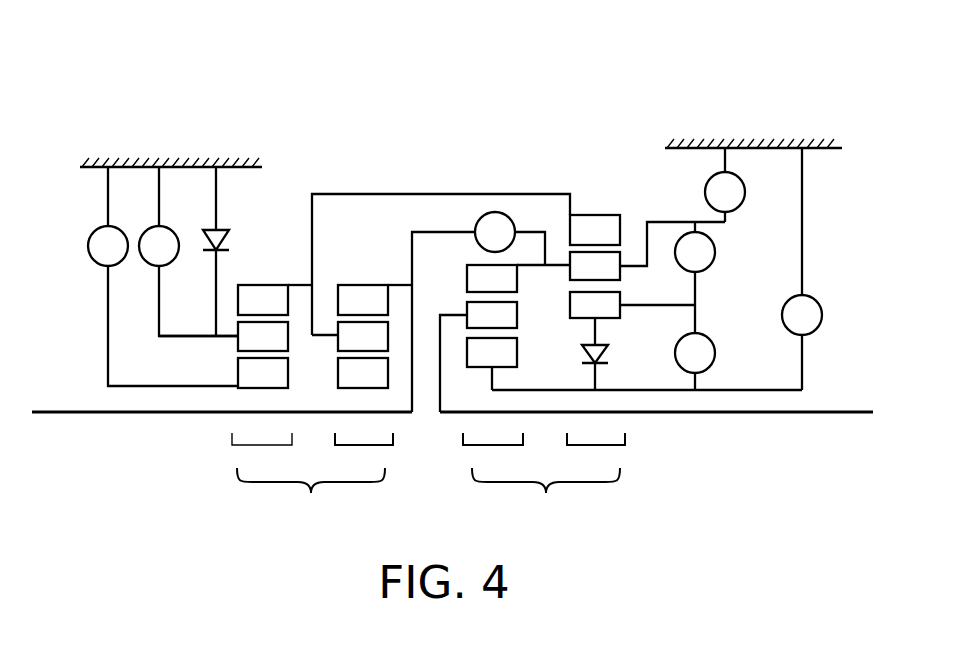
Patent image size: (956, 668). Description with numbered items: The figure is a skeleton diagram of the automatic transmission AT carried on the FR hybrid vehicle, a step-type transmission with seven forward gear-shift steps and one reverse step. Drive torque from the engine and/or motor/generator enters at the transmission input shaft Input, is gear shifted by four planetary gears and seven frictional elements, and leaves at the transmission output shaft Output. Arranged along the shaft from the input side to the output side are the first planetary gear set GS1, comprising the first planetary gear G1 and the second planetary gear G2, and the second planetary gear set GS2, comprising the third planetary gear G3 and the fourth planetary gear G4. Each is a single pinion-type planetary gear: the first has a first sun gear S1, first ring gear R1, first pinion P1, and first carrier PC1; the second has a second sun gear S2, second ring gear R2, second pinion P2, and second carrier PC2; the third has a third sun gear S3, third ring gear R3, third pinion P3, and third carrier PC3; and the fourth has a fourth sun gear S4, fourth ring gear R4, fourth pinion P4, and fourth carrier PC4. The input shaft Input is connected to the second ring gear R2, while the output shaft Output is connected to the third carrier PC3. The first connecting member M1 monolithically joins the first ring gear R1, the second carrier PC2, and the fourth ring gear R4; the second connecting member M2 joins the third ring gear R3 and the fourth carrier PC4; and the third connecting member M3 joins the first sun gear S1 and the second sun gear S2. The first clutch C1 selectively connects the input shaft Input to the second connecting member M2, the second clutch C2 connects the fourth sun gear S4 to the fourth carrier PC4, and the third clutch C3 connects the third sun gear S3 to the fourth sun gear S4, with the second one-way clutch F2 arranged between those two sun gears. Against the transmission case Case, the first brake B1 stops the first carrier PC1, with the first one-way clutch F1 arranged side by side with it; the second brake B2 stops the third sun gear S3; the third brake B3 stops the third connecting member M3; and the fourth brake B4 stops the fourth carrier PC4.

The automatic transmission AT is at (436, 40).
The transmission case Case is at (126, 168).
The transmission input shaft Input is at (82, 412).
The transmission output shaft Output is at (735, 412).
The first connecting member M1 is at (449, 194).
The second connecting member M2 is at (547, 267).
The third connecting member M3 is at (253, 322).
The first brake B1 is at (188, 251).
The second brake B2 is at (802, 269).
The third brake B3 is at (163, 276).
The fourth brake B4 is at (725, 185).
The first clutch C1 is at (510, 238).
The second clutch C2 is at (695, 277).
The third clutch C3 is at (695, 361).
The first one-way clutch F1 is at (228, 223).
The second one-way clutch F2 is at (606, 351).
The first planetary gear G1 is at (262, 452).
The second planetary gear G2 is at (364, 452).
The third planetary gear G3 is at (493, 452).
The fourth planetary gear G4 is at (596, 452).
The first planetary gear set GS1 is at (311, 496).
The second planetary gear set GS2 is at (546, 496).
The first ring gear R1 is at (275, 300).
The second ring gear R2 is at (375, 300).
The third ring gear R3 is at (518, 278).
The fourth ring gear R4 is at (595, 230).
The first pinion P1 is at (263, 336).
The second pinion P2 is at (363, 336).
The third pinion P3 is at (492, 315).
The fourth pinion P4 is at (595, 266).
The first sun gear S1 is at (263, 373).
The second sun gear S2 is at (363, 373).
The third sun gear S3 is at (492, 364).
The fourth sun gear S4 is at (632, 305).
The first carrier PC1 is at (227, 337).
The second carrier PC2 is at (325, 337).
The third carrier PC3 is at (455, 315).
The fourth carrier PC4 is at (640, 268).